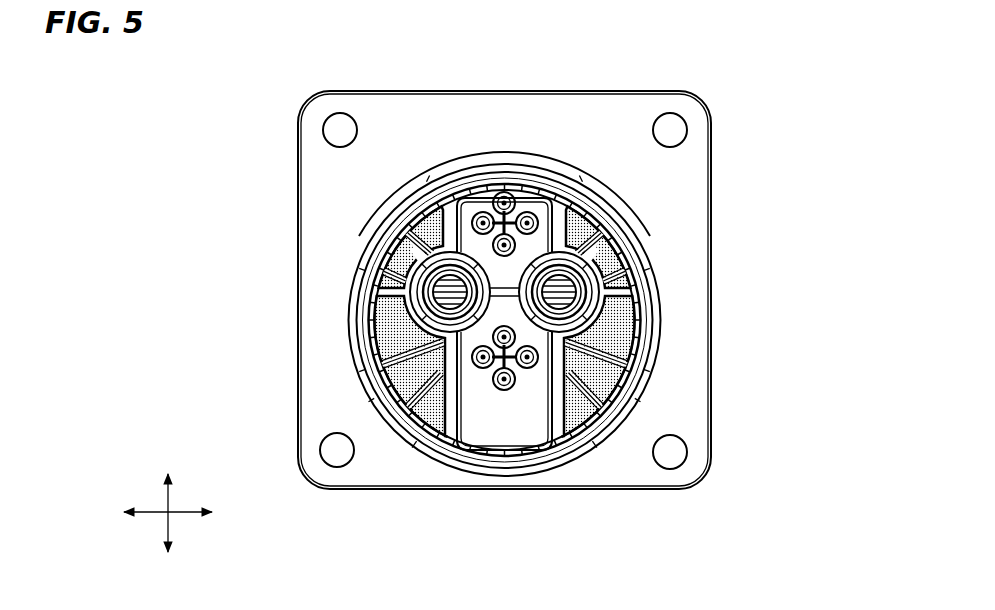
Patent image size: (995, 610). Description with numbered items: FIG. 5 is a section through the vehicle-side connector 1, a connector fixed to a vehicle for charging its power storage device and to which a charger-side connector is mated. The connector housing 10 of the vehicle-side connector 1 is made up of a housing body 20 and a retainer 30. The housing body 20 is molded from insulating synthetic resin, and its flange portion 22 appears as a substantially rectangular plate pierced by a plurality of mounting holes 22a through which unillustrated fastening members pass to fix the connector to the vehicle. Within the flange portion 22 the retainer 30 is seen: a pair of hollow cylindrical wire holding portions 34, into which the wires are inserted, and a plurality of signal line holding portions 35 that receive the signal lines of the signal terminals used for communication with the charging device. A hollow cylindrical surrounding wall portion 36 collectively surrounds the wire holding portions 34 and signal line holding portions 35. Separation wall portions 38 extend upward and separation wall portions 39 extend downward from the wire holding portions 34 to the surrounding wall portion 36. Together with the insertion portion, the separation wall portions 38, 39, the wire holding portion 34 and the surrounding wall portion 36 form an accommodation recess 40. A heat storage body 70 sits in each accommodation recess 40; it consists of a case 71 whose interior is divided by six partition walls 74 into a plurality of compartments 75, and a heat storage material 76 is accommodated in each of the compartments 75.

The vehicle-side connector 1 is at (778, 81).
The connector housing 10 is at (799, 161).
The housing body 20 is at (750, 123).
The flange portion 22 is at (713, 172).
The mounting hole 22a is at (668, 118).
The retainer 30 is at (684, 289).
The wire holding portion 34 is at (400, 238).
The signal line holding portion 35 is at (536, 207).
The surrounding wall portion 36 is at (622, 238).
The separation wall portion 38 is at (466, 197).
The separation wall portion 39 is at (454, 452).
The accommodation recess 40 is at (598, 214).
The heat storage body 70 is at (416, 441).
The case 71 is at (400, 375).
The partition wall 74 is at (373, 348).
The compartment 75 is at (370, 328).
The heat storage material 76 is at (382, 398).